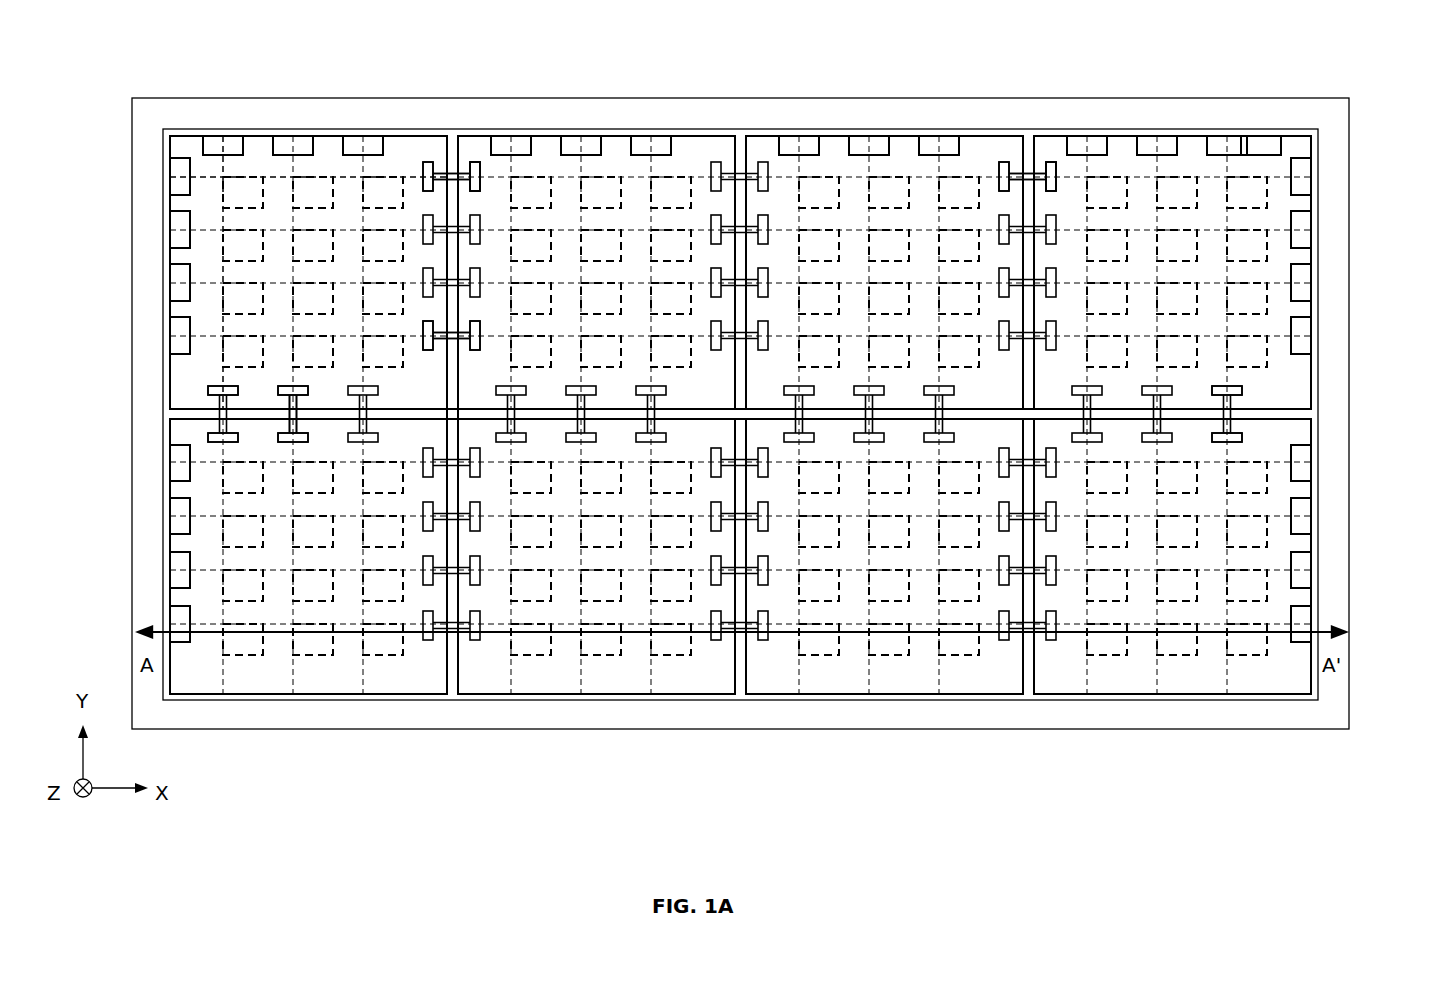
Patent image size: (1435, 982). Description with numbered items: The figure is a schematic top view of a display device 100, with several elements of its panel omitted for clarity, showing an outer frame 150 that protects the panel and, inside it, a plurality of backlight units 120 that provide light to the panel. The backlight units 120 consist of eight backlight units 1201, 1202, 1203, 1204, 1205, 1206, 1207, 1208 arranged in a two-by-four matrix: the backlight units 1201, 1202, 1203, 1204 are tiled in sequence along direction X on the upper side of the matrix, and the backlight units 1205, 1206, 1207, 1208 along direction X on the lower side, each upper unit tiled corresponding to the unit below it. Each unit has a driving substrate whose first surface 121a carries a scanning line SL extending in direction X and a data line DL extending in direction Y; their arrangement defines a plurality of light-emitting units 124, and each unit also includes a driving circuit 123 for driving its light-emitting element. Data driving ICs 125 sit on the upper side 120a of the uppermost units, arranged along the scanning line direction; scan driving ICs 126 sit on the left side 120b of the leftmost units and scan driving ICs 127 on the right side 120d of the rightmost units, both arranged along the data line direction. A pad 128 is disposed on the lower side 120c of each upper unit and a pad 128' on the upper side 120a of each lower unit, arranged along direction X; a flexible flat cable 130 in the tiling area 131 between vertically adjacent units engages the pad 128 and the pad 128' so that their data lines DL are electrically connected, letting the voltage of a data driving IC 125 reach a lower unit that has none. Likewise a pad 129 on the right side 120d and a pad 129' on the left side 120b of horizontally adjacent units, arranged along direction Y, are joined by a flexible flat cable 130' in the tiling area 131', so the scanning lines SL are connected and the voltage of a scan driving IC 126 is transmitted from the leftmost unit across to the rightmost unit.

The display device 100 is at (1420, 792).
The backlight units 120 is at (714, 424).
The backlight unit 1201 is at (182, 135).
The backlight unit 1202 is at (687, 135).
The backlight unit 1203 is at (893, 135).
The backlight unit 1204 is at (1195, 135).
The backlight unit 1205 is at (322, 695).
The backlight unit 1206 is at (693, 700).
The backlight unit 1207 is at (984, 700).
The backlight unit 1208 is at (1272, 695).
The upper side 120a is at (305, 134).
The left side 120b is at (745, 151).
The lower side 120c is at (204, 412).
The right side 120d is at (1026, 150).
The first surface 121a is at (1266, 154).
The driving circuit 123 is at (530, 196).
The light-emitting units 124 is at (395, 183).
The data driving ICs 125 is at (292, 142).
The scan driving ICs 126 is at (177, 163).
The scan driving ICs 127 is at (1303, 178).
The pad 128 is at (740, 358).
The pad 128' is at (741, 465).
The pad 129 is at (724, 107).
The pad 129' is at (781, 107).
The flexible flat cable 130 is at (316, 412).
The flexible flat cable 130' is at (455, 359).
The tiling area 131 is at (740, 411).
The tiling area 131' is at (457, 418).
The outer frame 150 is at (1163, 716).
The scanning line SL is at (200, 177).
The data line DL is at (222, 272).